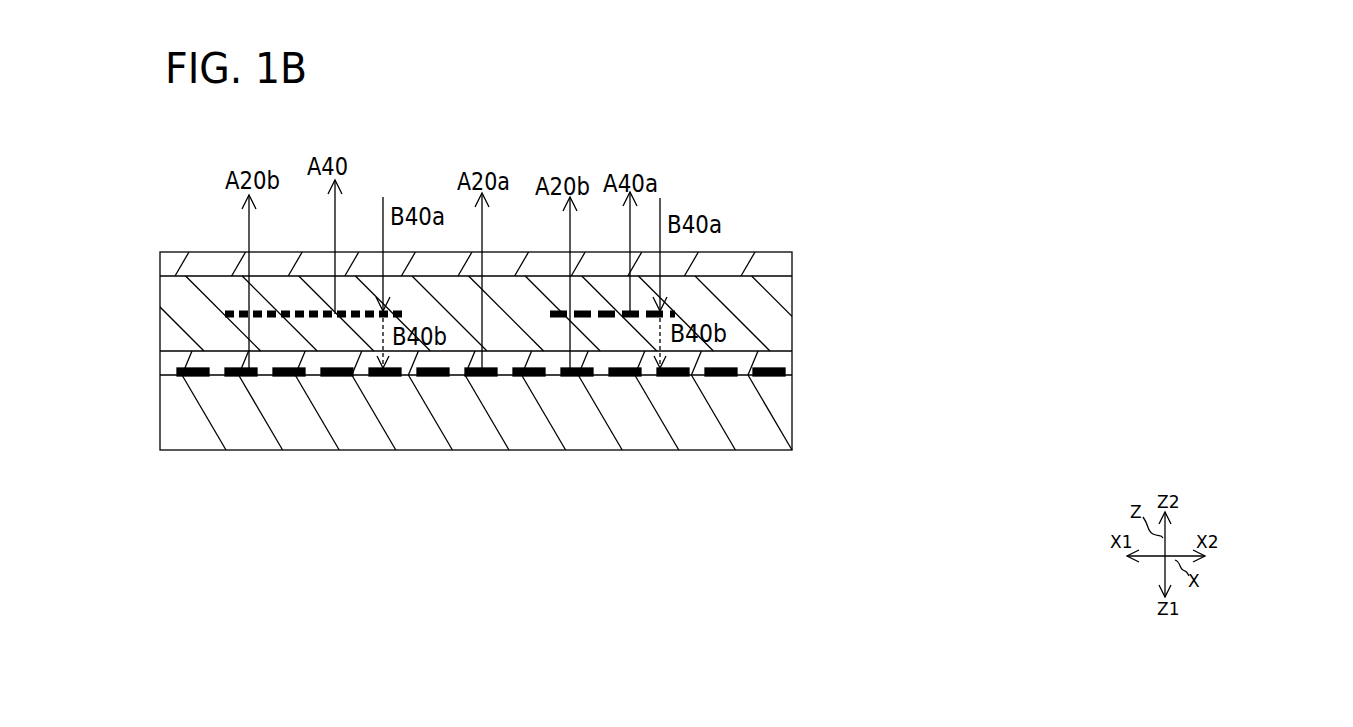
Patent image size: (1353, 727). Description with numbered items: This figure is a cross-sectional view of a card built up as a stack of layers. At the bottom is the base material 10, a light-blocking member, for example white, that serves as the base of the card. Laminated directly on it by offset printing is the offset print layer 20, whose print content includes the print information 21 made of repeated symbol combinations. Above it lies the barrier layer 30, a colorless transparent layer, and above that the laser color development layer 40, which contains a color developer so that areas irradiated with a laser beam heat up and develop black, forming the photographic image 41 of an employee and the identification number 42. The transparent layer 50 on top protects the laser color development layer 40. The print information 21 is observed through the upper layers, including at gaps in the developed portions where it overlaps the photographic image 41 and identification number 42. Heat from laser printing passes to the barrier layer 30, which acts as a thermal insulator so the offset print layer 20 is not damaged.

The transparent layer 50 is at (792, 263).
The laser color development layer 40 is at (792, 320).
The barrier layer 30 is at (792, 357).
The offset print layer 20 is at (792, 369).
The base material 10 is at (792, 415).
The photographic image 41 is at (228, 312).
The identification number 42 is at (560, 311).
The print information 21 is at (768, 368).